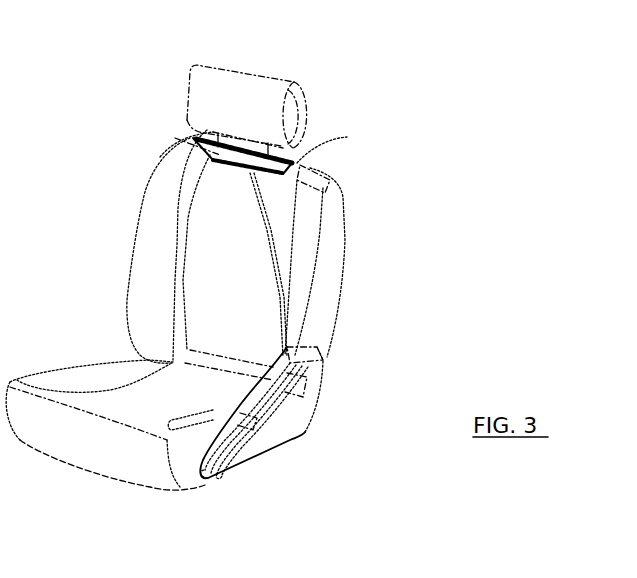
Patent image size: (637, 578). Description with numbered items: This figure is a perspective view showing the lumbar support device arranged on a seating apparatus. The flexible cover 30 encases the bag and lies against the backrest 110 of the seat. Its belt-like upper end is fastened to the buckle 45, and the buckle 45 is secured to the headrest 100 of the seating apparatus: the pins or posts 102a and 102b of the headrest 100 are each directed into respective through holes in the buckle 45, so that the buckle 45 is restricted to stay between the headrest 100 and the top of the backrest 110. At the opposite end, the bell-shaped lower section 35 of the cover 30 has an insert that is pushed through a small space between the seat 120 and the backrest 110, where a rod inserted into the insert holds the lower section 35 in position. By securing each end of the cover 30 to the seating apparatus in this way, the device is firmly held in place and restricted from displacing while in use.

The headrest 100 is at (276, 79).
The pin or post of the headrest 102a is at (200, 134).
The pin or post of the headrest 102b is at (300, 152).
The backrest 110 is at (147, 182).
The seat 120 is at (62, 372).
The buckle 45 is at (347, 137).
The flexible cover 30 is at (252, 263).
The bell shaped end (lower section of the cover) 35 is at (240, 358).